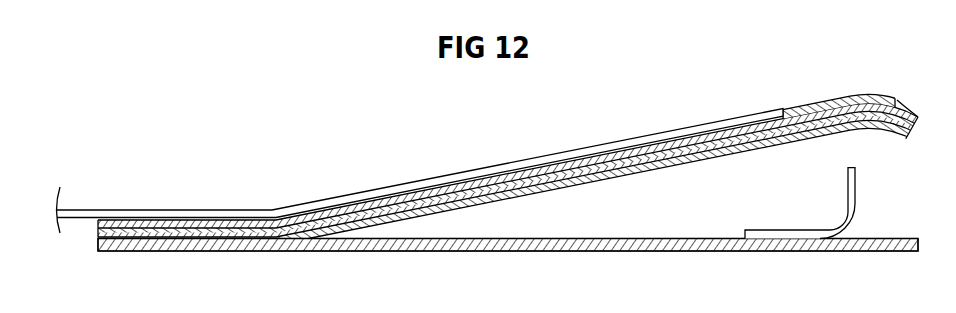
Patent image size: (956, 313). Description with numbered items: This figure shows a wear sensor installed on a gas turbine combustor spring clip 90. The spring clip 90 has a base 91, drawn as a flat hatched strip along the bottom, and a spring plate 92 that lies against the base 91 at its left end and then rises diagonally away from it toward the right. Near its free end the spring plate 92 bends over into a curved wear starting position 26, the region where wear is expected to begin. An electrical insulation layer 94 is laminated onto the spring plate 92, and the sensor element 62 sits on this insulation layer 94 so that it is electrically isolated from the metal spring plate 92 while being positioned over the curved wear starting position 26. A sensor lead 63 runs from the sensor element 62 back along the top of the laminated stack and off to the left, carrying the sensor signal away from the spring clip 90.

The curved wear starting position 26 is at (868, 83).
The sensor element 62 is at (815, 105).
The sensor lead 63 is at (78, 212).
The gas turbine combustor spring clip 90 is at (521, 134).
The base 91 is at (527, 246).
The spring plate 92 is at (637, 173).
The electrical insulation layer 94 is at (668, 143).